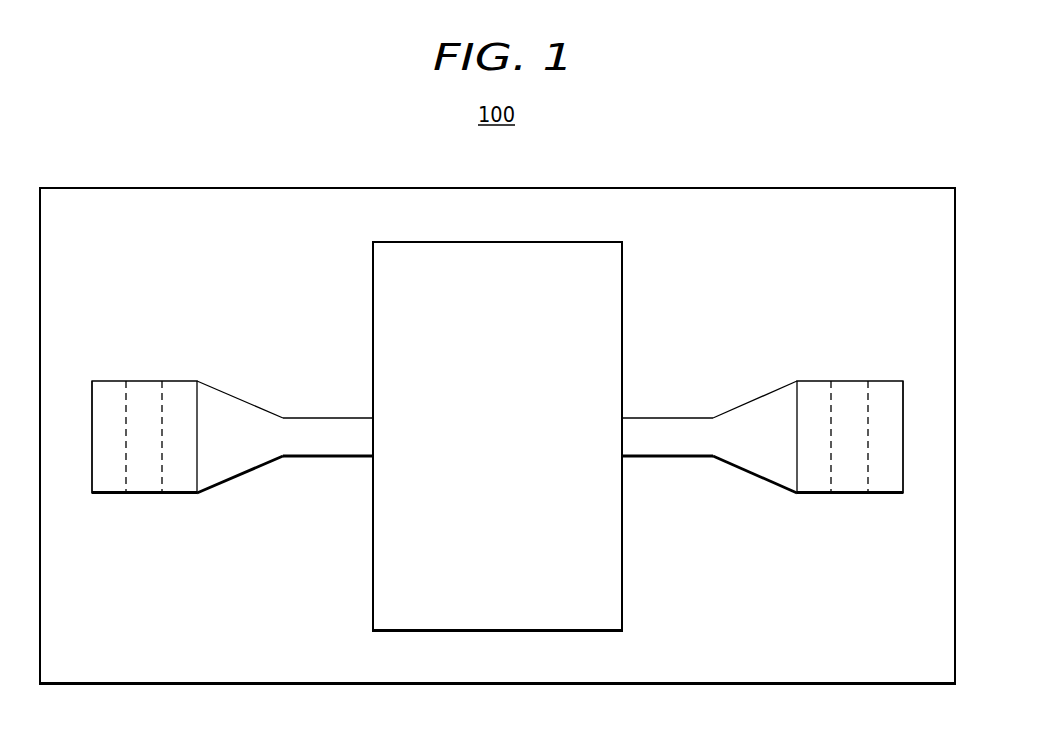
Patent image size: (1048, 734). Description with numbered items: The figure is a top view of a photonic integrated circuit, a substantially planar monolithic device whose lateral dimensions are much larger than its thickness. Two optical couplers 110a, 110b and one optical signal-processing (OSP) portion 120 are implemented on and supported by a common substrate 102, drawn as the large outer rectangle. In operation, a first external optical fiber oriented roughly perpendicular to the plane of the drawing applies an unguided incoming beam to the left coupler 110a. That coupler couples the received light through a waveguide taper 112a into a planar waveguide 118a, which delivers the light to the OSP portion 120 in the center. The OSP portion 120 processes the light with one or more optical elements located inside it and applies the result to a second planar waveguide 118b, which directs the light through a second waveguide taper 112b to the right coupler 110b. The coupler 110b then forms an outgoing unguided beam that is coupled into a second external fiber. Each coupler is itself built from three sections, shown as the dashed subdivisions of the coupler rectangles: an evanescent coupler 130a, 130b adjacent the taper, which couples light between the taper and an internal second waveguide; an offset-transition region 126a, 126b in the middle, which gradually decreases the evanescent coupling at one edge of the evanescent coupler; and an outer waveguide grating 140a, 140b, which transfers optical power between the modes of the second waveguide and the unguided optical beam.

The substrate 102 is at (935, 219).
The optical coupler 110a is at (140, 498).
The optical coupler 110b is at (848, 498).
The waveguide taper 112a is at (238, 457).
The waveguide taper 112b is at (758, 457).
The planar waveguide 118a is at (328, 446).
The planar waveguide 118b is at (660, 447).
The optical signal-processing portion 120 is at (612, 268).
The offset-transition region 126a is at (147, 390).
The offset-transition region 126b is at (853, 390).
The evanescent coupler 130a is at (181, 390).
The evanescent coupler 130b is at (814, 390).
The waveguide grating 140a is at (110, 390).
The waveguide grating 140b is at (885, 390).